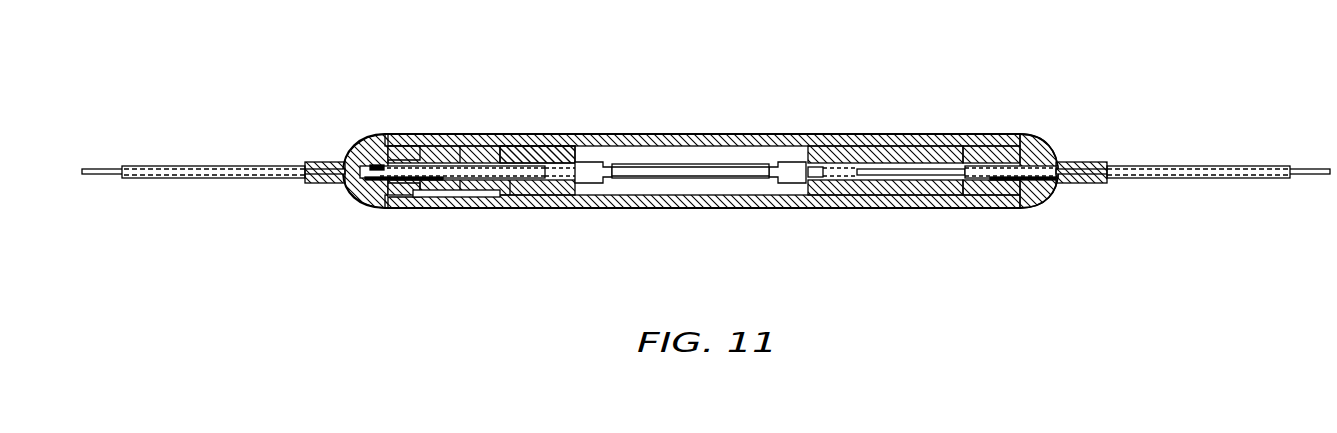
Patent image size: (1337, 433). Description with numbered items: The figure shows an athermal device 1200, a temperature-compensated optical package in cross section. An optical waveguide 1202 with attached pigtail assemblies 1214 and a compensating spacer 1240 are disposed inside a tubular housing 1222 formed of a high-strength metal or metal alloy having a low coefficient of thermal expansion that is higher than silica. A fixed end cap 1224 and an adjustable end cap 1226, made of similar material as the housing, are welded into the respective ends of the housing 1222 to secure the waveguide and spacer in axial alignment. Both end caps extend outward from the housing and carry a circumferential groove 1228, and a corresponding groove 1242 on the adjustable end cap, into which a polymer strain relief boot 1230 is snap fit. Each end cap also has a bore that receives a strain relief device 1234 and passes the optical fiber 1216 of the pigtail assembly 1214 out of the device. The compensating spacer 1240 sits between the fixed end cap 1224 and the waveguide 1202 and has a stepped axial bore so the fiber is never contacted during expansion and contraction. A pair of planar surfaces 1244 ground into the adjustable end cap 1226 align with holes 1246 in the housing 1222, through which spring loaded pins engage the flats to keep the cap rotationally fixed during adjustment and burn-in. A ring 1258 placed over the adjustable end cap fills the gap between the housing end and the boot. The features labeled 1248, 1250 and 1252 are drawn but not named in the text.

The athermal device 1200 is at (931, 85).
The optical waveguide 1202 is at (696, 164).
The pigtail assembly 1214 is at (879, 180).
The optical fiber 1216 is at (98, 168).
The tubular housing 1222 is at (597, 140).
The fixed end cap 1224 is at (1012, 150).
The adjustable end cap 1226 is at (505, 150).
The circumferential groove 1228 is at (1033, 203).
The strain relief boot 1230 is at (356, 152).
The strain relief device 1234 is at (410, 182).
The compensating spacer 1240 is at (829, 156).
The groove 1242 is at (371, 206).
The planar surfaces 1244 is at (495, 206).
The holes 1246 is at (462, 206).
The upper inner block 1248 is at (512, 142).
The lead sleeve 1250 is at (218, 178).
The bore sleeve 1252 is at (432, 158).
The ring 1258 is at (398, 132).